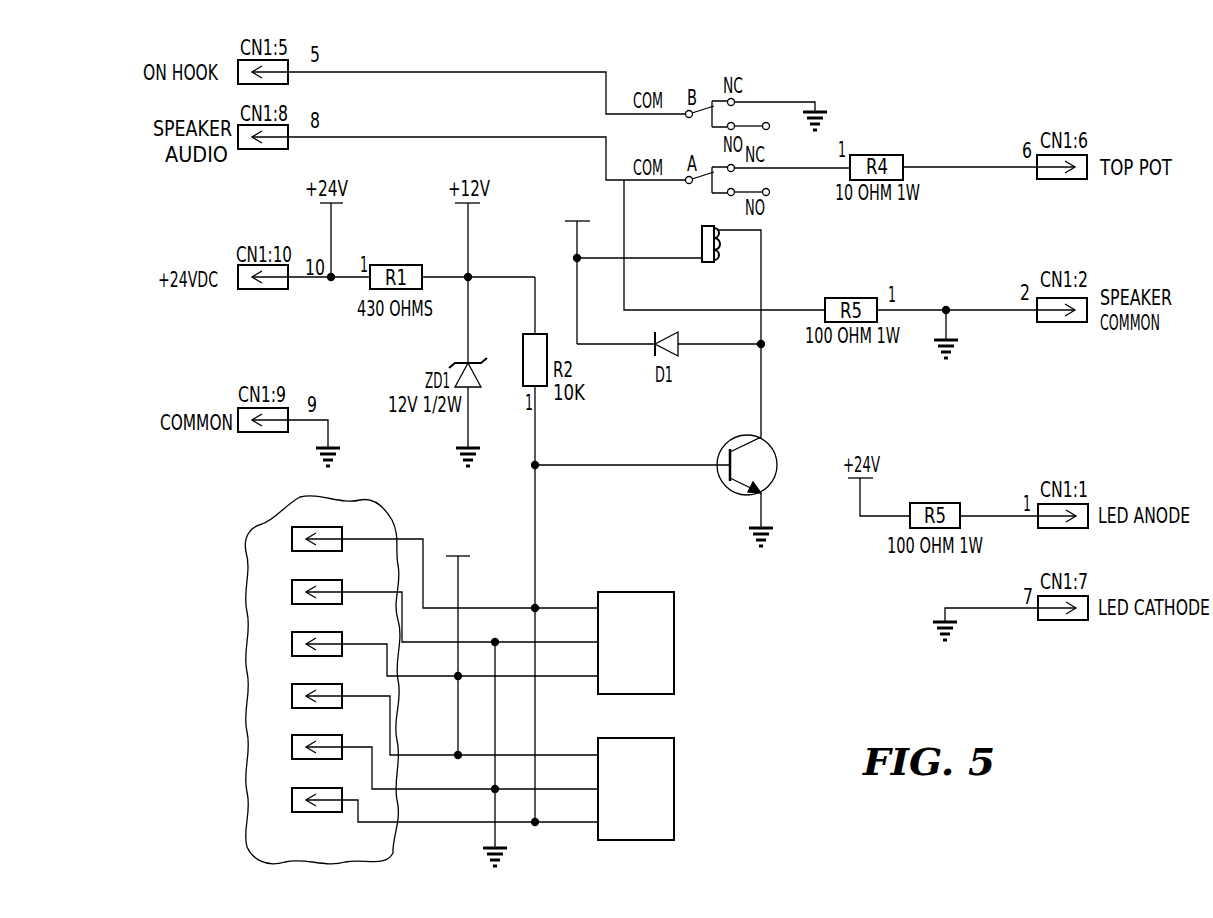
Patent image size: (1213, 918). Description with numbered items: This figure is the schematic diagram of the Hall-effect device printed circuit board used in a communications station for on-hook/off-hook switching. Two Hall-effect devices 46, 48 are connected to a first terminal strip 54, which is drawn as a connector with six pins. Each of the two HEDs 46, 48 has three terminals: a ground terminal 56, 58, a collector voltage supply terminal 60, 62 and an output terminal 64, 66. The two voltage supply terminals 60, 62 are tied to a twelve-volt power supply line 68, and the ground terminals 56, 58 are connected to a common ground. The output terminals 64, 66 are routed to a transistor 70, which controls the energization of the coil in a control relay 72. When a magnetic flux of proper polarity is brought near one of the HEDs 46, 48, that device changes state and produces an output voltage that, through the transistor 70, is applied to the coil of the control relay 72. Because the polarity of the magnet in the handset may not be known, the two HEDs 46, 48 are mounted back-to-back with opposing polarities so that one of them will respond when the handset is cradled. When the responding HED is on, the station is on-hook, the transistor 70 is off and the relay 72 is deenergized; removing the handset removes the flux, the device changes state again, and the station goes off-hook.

The first terminal strip 54 is at (250, 618).
The 12-volt power supply line 68 is at (457, 527).
The output terminal 66 is at (625, 592).
The Hall-effect device 48 is at (672, 601).
The ground terminal 58 is at (640, 644).
The collector voltage supply terminal 62 is at (640, 677).
The collector voltage supply terminal 60 is at (625, 738).
The Hall-effect device 46 is at (672, 748).
The ground terminal 56 is at (640, 790).
The output terminal 64 is at (640, 823).
The transistor Q1 70 is at (770, 446).
The control relay 72 is at (722, 283).